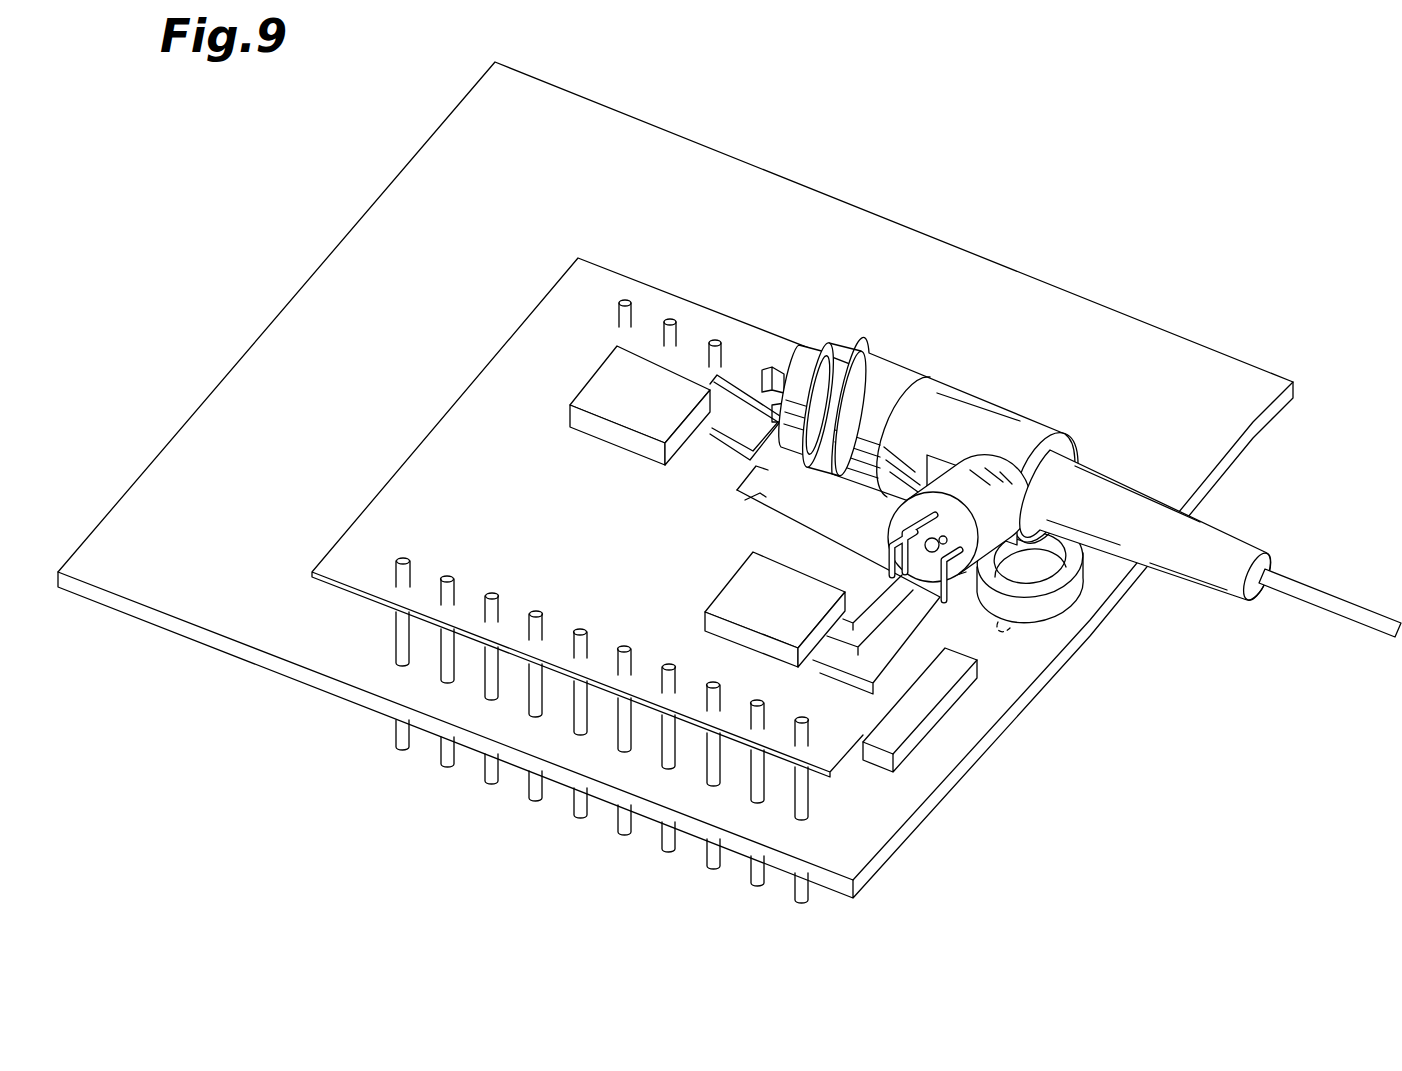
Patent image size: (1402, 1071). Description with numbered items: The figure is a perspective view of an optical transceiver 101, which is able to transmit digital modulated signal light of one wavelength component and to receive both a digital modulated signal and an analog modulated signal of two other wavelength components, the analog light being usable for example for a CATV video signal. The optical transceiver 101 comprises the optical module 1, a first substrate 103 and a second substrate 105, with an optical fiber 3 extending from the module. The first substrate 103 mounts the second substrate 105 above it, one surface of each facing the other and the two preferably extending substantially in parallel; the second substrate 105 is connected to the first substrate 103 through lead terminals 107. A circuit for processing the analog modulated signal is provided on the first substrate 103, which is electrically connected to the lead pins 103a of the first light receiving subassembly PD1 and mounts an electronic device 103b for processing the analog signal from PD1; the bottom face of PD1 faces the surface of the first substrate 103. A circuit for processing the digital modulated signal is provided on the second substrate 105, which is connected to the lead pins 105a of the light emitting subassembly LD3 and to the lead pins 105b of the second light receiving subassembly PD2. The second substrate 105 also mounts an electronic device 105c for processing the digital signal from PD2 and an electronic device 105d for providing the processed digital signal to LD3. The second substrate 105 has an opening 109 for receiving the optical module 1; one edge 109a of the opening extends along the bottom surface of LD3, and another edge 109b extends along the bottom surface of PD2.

The optical transceiver 101 is at (1075, 193).
The first substrate 103 is at (347, 268).
The lead pins of the first light receiving subassembly 103a is at (1003, 632).
The electronic device 103b is at (913, 718).
The second substrate 105 is at (575, 295).
The lead pins of the light emitting subassembly 105a is at (785, 375).
The lead pins of the second light receiving subassembly 105b is at (963, 582).
The electronic device 105c is at (752, 612).
The electronic device 105d is at (605, 395).
The lead terminals 107 is at (800, 790).
The opening 109 is at (845, 516).
The edge of the opening 109a is at (763, 467).
The edge of the opening 109b is at (762, 497).
The optical module 1 is at (987, 401).
The optical fiber 3 is at (1340, 607).
The light emitting subassembly LD3 is at (897, 372).
The first light receiving subassembly PD1 is at (1050, 610).
The second light receiving subassembly PD2 is at (893, 527).